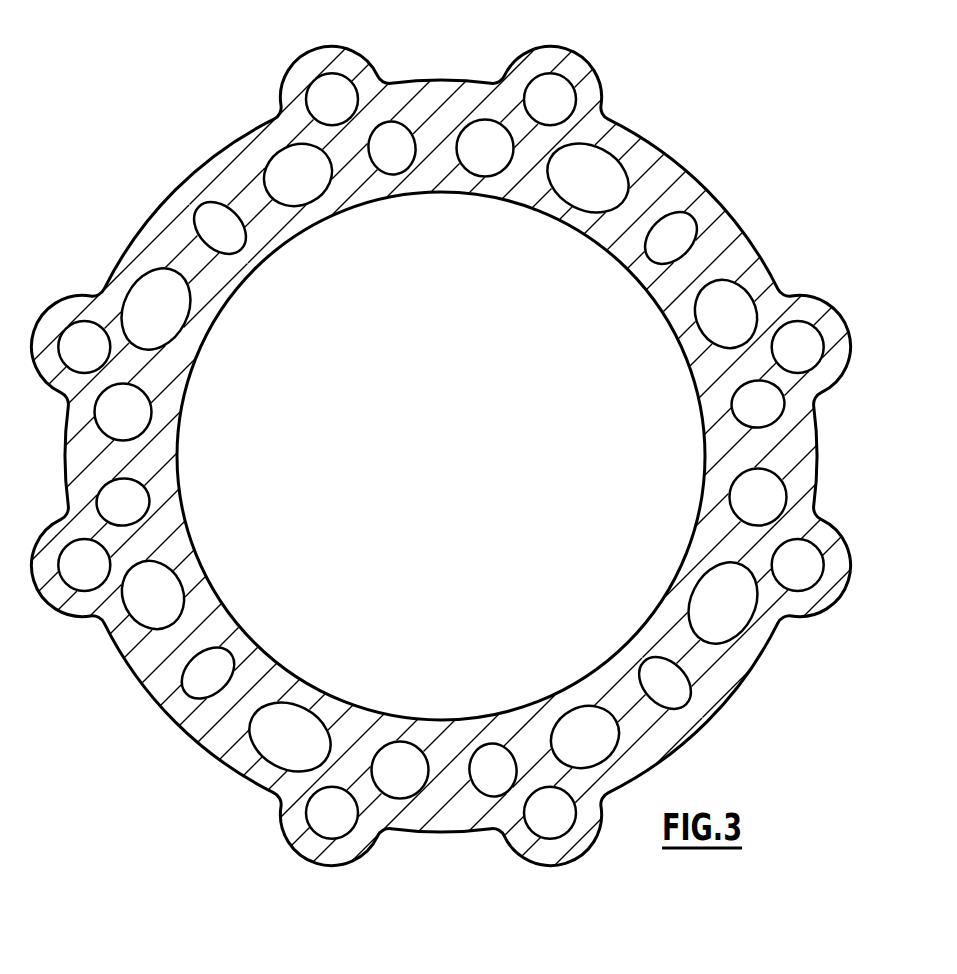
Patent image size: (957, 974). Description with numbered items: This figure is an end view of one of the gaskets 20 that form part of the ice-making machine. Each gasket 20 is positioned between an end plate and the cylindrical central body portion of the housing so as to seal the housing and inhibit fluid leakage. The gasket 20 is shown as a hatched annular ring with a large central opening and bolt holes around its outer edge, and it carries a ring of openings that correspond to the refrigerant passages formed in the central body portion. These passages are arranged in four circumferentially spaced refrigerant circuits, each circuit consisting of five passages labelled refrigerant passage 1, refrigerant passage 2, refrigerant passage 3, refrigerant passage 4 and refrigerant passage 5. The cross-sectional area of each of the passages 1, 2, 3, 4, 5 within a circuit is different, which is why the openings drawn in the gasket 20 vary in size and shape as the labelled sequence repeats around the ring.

The gasket 20 is at (715, 106).
The refrigerant passage 1 is at (440, 459).
The refrigerant passage 2 is at (439, 455).
The refrigerant passage 3 is at (441, 459).
The refrigerant passage 4 is at (439, 455).
The refrigerant passage 5 is at (439, 457).